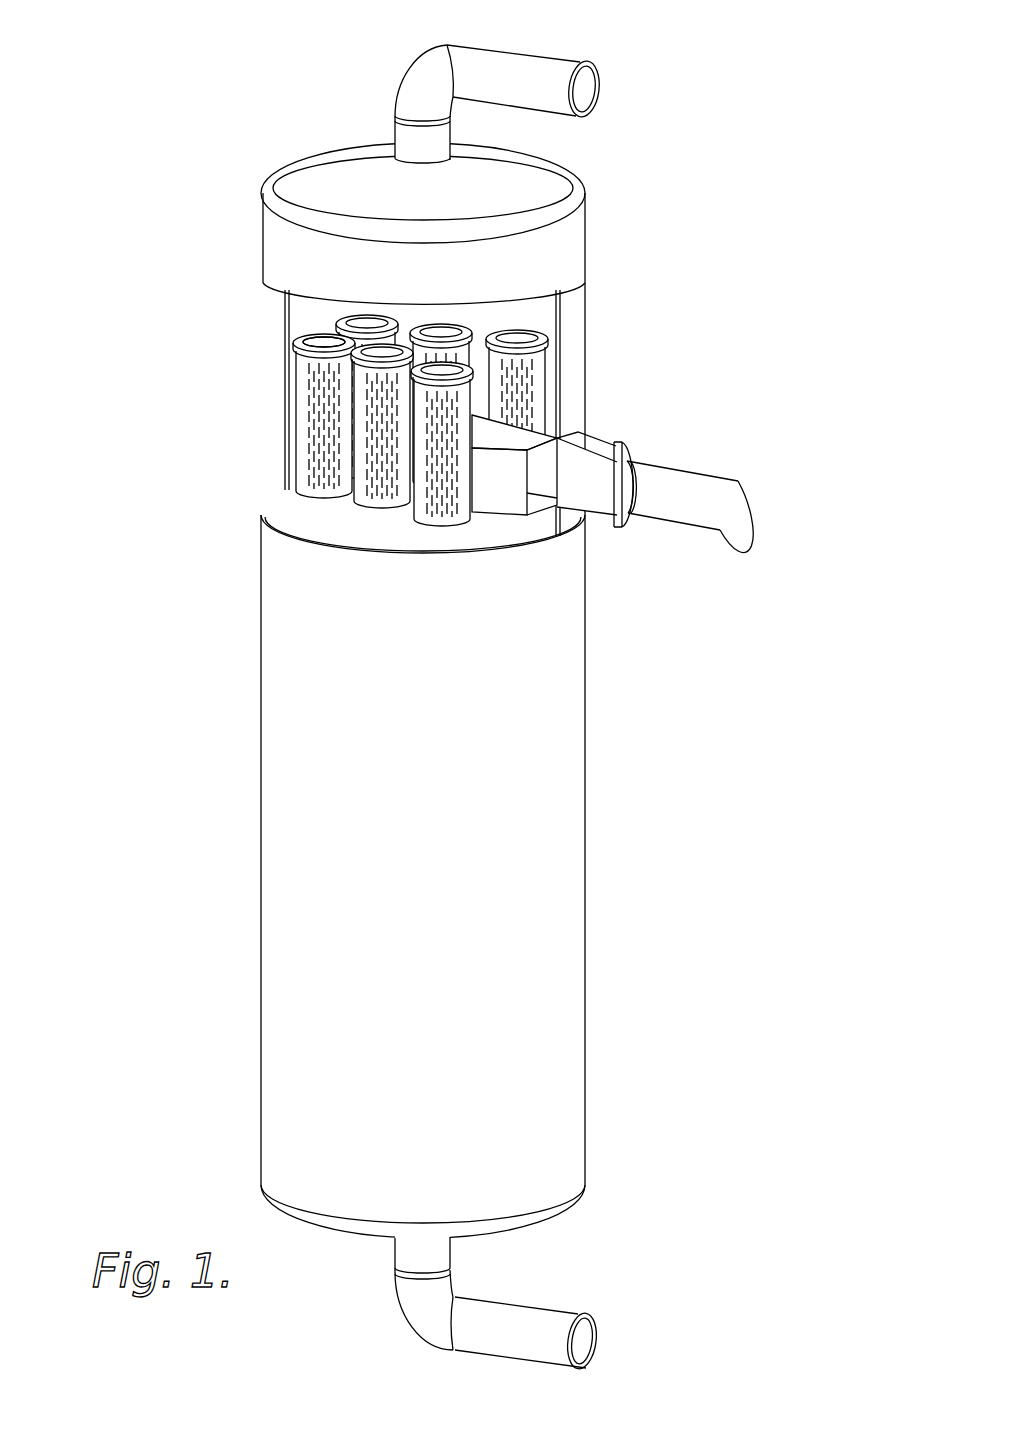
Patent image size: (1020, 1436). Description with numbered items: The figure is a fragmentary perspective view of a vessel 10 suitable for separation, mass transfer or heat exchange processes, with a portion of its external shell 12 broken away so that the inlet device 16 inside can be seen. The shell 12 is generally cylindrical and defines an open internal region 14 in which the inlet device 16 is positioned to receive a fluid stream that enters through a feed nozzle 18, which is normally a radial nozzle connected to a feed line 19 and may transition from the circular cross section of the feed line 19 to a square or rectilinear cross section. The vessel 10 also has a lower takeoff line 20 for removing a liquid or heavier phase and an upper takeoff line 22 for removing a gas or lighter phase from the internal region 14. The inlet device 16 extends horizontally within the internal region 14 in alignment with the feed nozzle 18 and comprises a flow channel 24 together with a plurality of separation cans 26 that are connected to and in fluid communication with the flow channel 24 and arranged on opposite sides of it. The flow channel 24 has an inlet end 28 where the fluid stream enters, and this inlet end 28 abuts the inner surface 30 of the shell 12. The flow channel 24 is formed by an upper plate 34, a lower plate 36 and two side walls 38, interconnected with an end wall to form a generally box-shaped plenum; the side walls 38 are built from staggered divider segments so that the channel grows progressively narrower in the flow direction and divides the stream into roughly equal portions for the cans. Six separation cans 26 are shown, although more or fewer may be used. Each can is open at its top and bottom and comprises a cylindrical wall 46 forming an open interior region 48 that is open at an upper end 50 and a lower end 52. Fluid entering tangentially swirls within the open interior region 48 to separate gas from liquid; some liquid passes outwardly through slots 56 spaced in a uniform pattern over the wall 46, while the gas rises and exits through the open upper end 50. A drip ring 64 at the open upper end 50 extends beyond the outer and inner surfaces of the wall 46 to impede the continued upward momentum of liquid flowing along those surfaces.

The vessel 10 is at (490, 685).
The external shell 12 is at (582, 278).
The internal region 14 is at (284, 516).
The inlet device 16 is at (545, 510).
The feed nozzle 18 is at (598, 443).
The feed line 19 is at (707, 468).
The lower takeoff line 20 is at (543, 1315).
The upper takeoff line 22 is at (533, 68).
The flow channel 24 is at (570, 478).
The separation cans 26 is at (386, 506).
The inlet end 28 is at (542, 513).
The inner surface 30 is at (297, 321).
The upper plate 34 is at (540, 432).
The lower plate 36 is at (520, 515).
The side walls 38 is at (485, 492).
The cylindrical wall 46 is at (430, 517).
The open interior region 48 is at (367, 318).
The open upper end 50 is at (322, 342).
The open lower end 52 is at (303, 488).
The slots 56 is at (503, 370).
The drip ring 64 is at (440, 333).